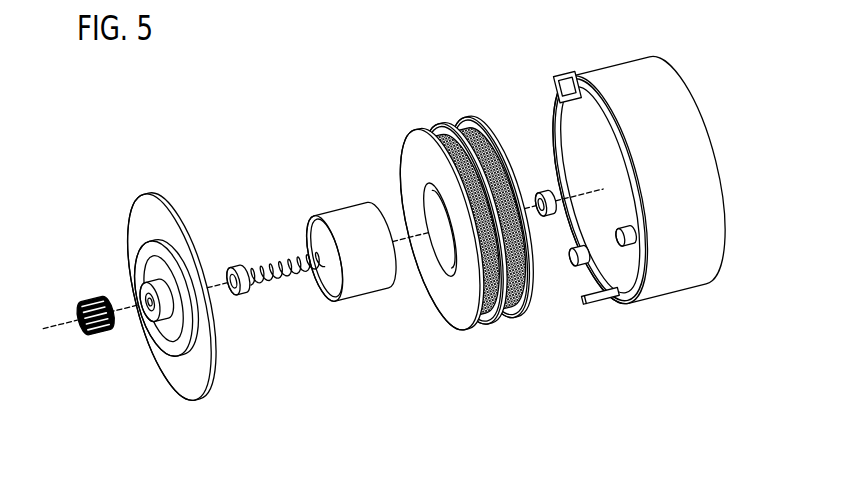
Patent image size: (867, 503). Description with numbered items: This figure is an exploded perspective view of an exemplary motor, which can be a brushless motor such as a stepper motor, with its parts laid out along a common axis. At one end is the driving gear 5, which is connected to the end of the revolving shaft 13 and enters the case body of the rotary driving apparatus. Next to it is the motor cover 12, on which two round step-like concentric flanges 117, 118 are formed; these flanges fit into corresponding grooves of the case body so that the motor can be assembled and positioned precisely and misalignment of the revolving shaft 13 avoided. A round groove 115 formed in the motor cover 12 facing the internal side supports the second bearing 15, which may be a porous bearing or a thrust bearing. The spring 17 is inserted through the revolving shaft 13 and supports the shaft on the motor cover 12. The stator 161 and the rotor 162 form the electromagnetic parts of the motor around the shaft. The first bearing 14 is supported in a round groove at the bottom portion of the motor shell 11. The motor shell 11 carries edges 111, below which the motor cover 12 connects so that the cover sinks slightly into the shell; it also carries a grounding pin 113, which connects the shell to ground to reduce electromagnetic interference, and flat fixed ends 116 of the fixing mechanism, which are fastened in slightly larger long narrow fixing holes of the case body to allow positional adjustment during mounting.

The driving gear 5 is at (91, 336).
The motor shell 11 is at (628, 188).
The edges of the motor shell 111 is at (633, 305).
The grounding pin 113 is at (592, 304).
The flat fixed ends 116 is at (556, 79).
The motor cover 12 is at (152, 309).
The round groove 115 is at (137, 292).
The round step-like concentric flange 117 is at (165, 357).
The round step-like concentric flange 118 is at (152, 342).
The revolving shaft 13 is at (345, 270).
The rotor 162 is at (320, 296).
The first bearing 14 is at (544, 191).
The second bearing 15 is at (233, 262).
The stator 161 is at (442, 312).
The spring 17 is at (270, 293).